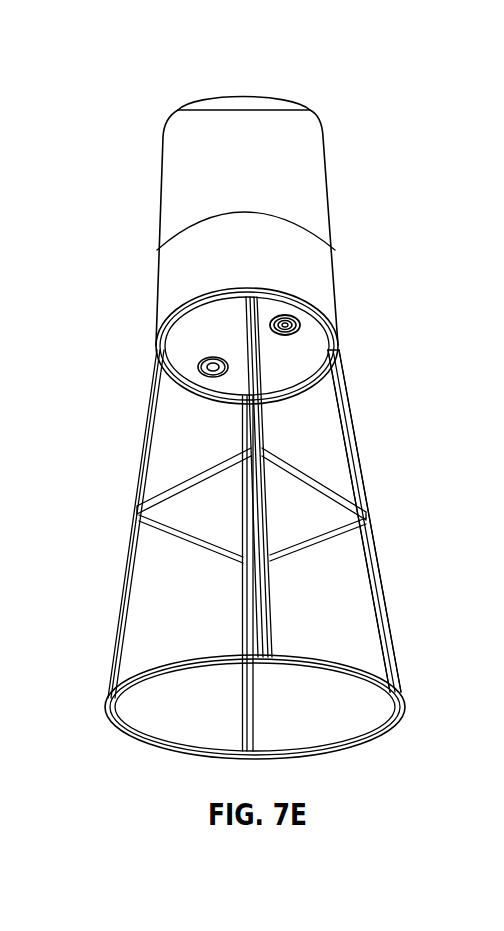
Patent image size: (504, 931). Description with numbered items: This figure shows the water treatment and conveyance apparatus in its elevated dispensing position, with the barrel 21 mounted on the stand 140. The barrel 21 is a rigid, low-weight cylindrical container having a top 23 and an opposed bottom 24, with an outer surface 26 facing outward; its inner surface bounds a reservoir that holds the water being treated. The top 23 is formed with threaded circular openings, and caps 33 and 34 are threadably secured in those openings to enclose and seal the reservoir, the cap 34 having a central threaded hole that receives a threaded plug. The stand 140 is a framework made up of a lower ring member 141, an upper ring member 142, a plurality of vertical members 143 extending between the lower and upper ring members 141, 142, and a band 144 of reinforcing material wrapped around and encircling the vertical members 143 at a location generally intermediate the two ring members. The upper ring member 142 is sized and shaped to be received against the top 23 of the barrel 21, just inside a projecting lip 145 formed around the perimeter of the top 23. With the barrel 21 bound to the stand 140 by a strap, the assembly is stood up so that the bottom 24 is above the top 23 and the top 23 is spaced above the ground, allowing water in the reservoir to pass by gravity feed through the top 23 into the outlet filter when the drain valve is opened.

The barrel 21 is at (318, 146).
The bottom 24 is at (215, 97).
The outer surface 26 is at (242, 264).
The top 23 is at (180, 352).
The cap 33 is at (215, 378).
The cap 34 is at (338, 350).
The upper ring member 142 is at (292, 398).
The projecting lip 145 is at (331, 323).
The stand 140 is at (395, 574).
The lower ring member 141 is at (400, 710).
The vertical members 143 is at (120, 590).
The band 144 is at (340, 500).